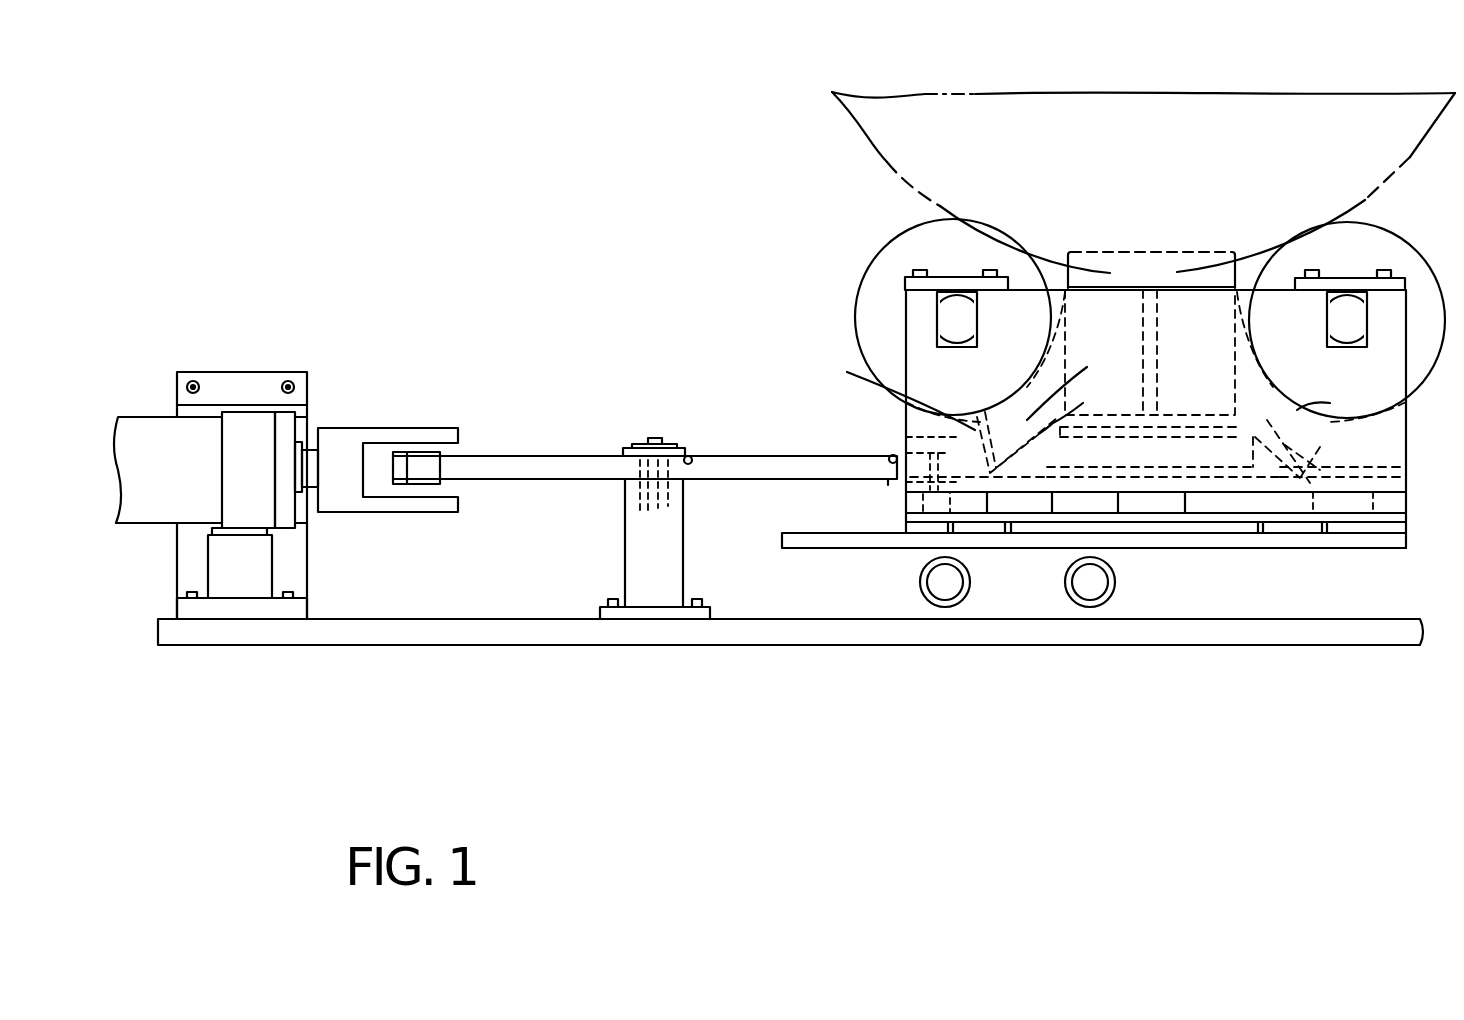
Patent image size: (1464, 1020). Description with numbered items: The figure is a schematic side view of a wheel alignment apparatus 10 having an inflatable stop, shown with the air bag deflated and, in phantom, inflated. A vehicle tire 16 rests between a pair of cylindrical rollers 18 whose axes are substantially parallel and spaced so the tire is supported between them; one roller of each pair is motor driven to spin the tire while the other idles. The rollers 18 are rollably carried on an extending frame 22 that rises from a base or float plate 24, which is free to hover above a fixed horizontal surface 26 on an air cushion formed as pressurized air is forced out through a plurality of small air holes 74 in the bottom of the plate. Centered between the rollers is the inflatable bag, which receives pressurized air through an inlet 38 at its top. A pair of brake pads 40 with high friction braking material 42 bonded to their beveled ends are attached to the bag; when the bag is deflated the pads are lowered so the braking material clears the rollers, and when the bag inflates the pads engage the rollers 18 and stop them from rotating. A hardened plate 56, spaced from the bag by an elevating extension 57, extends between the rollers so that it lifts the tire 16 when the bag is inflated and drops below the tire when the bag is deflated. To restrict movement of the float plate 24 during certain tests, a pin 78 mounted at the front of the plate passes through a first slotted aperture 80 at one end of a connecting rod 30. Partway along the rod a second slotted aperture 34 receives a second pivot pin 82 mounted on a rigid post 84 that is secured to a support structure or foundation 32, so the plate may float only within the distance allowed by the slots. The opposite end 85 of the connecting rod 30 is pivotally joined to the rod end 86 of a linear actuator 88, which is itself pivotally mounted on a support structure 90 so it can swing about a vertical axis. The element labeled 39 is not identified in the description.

The wheel alignment apparatus 10 is at (648, 140).
The tires 16 is at (893, 125).
The cylindrical rollers 18 is at (867, 272).
The extending frame 22 is at (1407, 478).
The float plate 24 is at (1407, 527).
The horizontal surface 26 is at (838, 506).
The connecting rod 30 is at (593, 485).
The support structure or foundation 32 is at (765, 619).
The second slotted aperture 34 is at (690, 456).
The inlet 38 is at (1157, 395).
The spacers 39 is at (1208, 540).
The brake pads 40 is at (845, 371).
The high friction braking material 42 is at (1008, 403).
The hardened plate 56 is at (1153, 290).
The elevating extension 57 is at (1208, 330).
The small air holes 74 is at (1008, 534).
The pin 78 is at (912, 440).
The first slotted aperture 80 is at (897, 458).
The second pivot pin 82 is at (628, 446).
The rigid post 84 is at (685, 576).
The opposite end 85 is at (393, 484).
The rod end 86 is at (462, 430).
The linear actuator 88 is at (320, 446).
The support structure 90 is at (297, 618).